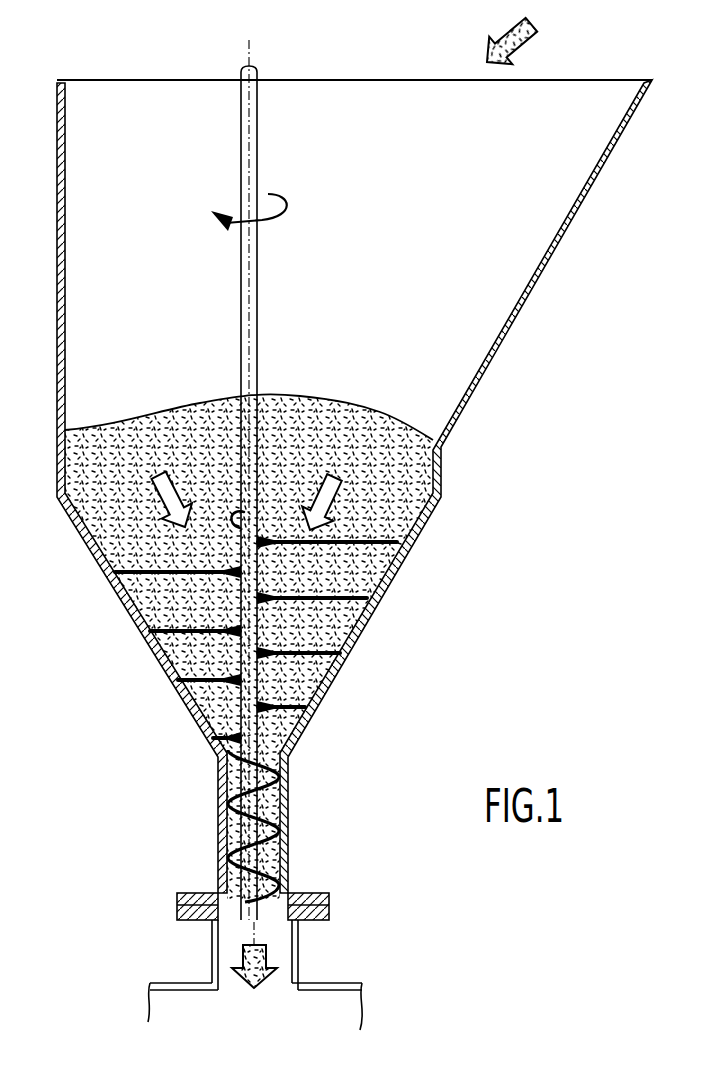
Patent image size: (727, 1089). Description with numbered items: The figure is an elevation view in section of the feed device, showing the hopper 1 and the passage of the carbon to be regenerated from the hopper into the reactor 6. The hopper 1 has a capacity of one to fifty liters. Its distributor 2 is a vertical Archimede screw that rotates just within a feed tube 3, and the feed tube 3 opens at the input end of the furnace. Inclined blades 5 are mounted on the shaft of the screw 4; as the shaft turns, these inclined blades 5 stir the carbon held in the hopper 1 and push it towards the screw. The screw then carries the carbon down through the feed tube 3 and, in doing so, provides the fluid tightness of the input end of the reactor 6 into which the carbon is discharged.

The hopper 1 is at (567, 173).
The distributor 2 is at (288, 780).
The feed tube 3 is at (290, 852).
The shaft of the screw 4 is at (300, 563).
The inclined blades 5 is at (345, 655).
The reactor 6 is at (280, 950).